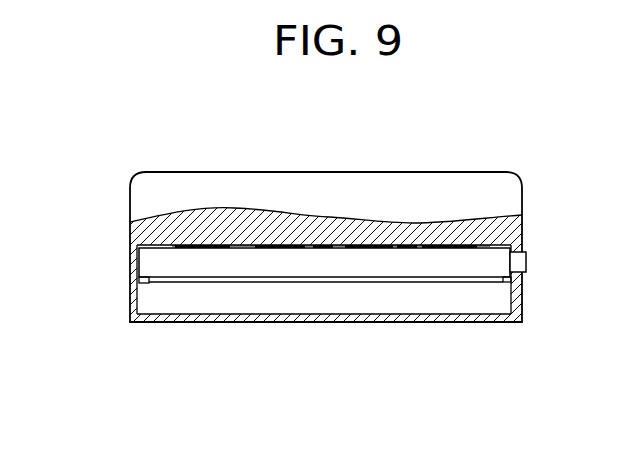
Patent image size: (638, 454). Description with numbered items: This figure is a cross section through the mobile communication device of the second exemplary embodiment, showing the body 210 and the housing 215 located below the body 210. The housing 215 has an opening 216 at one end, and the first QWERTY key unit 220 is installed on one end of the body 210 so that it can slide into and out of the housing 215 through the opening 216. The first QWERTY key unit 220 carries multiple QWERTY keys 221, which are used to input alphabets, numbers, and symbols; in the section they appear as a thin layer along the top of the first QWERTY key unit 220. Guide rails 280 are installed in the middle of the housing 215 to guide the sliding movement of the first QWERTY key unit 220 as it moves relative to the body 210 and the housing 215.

The body 210 is at (437, 185).
The housing 215 is at (130, 280).
The opening 216 is at (326, 297).
The first QWERTY key unit 220 is at (488, 255).
The QWERTY keys 221 is at (346, 245).
The guide rails 280 is at (497, 285).